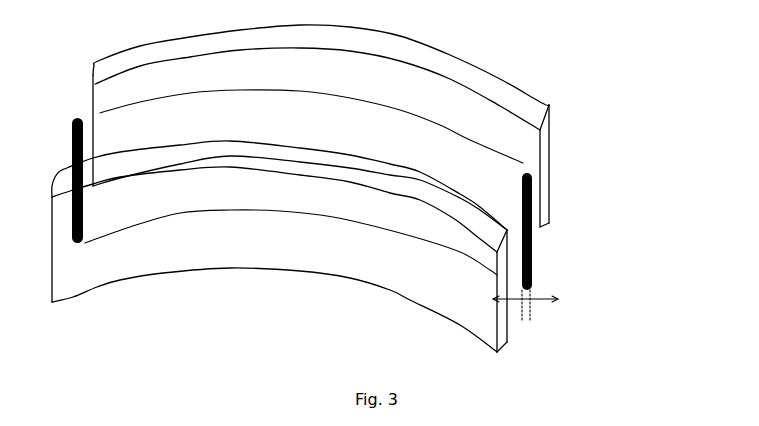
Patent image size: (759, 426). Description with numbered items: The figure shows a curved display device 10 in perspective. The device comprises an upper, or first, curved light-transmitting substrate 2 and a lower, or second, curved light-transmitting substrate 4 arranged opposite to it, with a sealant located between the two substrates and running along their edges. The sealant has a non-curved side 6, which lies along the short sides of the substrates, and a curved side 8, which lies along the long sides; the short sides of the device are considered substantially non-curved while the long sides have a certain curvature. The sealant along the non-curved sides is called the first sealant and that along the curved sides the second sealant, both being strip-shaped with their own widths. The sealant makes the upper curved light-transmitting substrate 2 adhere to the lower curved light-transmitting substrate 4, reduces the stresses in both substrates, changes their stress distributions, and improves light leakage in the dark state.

The curved display device 10 is at (714, 40).
The first curved light-transmitting substrate 2 is at (508, 337).
The second curved light-transmitting substrate 4 is at (543, 103).
The non-curved side of sealant 6 is at (540, 212).
The curved side of sealant 8 is at (510, 162).